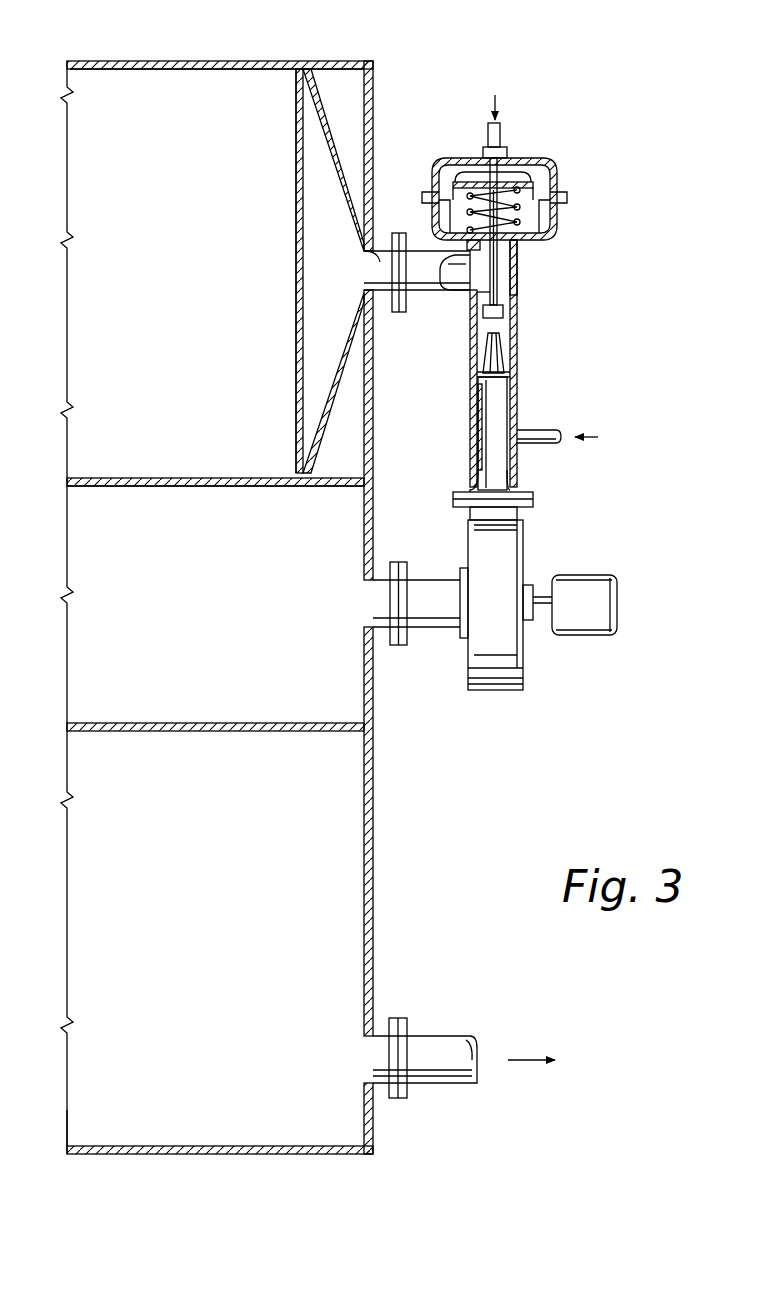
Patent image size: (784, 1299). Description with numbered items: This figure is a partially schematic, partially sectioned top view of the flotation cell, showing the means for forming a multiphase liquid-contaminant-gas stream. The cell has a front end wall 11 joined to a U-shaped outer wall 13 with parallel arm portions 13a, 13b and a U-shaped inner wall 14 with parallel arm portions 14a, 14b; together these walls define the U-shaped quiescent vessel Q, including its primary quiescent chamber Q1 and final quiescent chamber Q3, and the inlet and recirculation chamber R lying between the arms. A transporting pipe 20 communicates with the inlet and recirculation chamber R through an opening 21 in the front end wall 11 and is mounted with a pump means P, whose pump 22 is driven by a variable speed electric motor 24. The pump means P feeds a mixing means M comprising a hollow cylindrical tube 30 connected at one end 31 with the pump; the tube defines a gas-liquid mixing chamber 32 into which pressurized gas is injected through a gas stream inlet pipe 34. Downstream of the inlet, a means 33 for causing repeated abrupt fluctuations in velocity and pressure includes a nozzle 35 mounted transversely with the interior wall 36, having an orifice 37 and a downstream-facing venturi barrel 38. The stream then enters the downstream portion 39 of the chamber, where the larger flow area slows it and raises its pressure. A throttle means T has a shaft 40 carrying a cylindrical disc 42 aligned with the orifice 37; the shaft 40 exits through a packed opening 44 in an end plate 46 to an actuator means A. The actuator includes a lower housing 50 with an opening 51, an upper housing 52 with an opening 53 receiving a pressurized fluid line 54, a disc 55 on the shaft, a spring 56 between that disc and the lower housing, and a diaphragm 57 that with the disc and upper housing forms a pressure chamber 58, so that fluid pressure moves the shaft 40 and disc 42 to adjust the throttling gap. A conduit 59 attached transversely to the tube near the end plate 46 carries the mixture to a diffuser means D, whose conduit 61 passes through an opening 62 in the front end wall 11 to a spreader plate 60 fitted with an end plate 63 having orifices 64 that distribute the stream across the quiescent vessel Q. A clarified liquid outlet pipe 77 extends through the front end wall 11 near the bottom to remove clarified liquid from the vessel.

The front end wall 11 is at (374, 866).
The U-shaped outer wall 13 is at (220, 61).
The arm portion of outer wall 13a is at (172, 61).
The arm portion of outer wall 13b is at (124, 1156).
The U-shaped inner wall 14 is at (226, 488).
The arm portion of inner wall 14a is at (118, 488).
The arm portion of inner wall 14b is at (160, 722).
The U-shaped quiescent vessel Q is at (97, 84).
The primary quiescent chamber Q1 is at (178, 201).
The inlet and recirculation chamber R is at (145, 591).
The final quiescent chamber Q3 is at (148, 911).
The diffuser means D is at (340, 128).
The spreader plate 60 is at (336, 420).
The conduit 61 is at (362, 292).
The end plate 63 is at (296, 370).
The orifices 64 is at (297, 410).
The opening 62 is at (364, 264).
The conduit 59 is at (404, 312).
The downstream portion of gas-liquid mixing chamber 39 is at (477, 332).
The end plate 46 is at (462, 254).
The packed opening 44 is at (516, 262).
The throttle means T is at (502, 278).
The shaft 40 is at (499, 300).
The cylindrical disc 42 is at (505, 312).
The barrel 38 is at (500, 345).
The means for causing repeated abrupt alternate fluctuations 33 is at (512, 372).
The nozzle 35 is at (480, 379).
The orifice 37 is at (498, 378).
The interior wall 36 is at (480, 393).
The gas-liquid mixing chamber 32 is at (490, 412).
The gas stream inlet pipe 34 is at (540, 430).
The hollow cylindrical tube 30 is at (478, 468).
The end of hollow cylindrical tube 31 is at (478, 489).
The mixing means M is at (520, 478).
The pump means P is at (530, 636).
The pump 22 is at (498, 692).
The transporting pipe 20 is at (374, 612).
The opening 21 is at (374, 600).
The variable speed electric motor 24 is at (585, 575).
The actuator means A is at (562, 163).
The upper housing 52 is at (548, 162).
The opening 53 is at (506, 150).
The pressurized fluid line 54 is at (498, 125).
The disc 55 is at (462, 182).
The pressure chamber 58 is at (478, 168).
The diaphragm 57 is at (440, 180).
The spring 56 is at (465, 198).
The opening 51 is at (522, 215).
The lower housing 50 is at (540, 222).
The clarified liquid outlet pipe 77 is at (378, 1042).